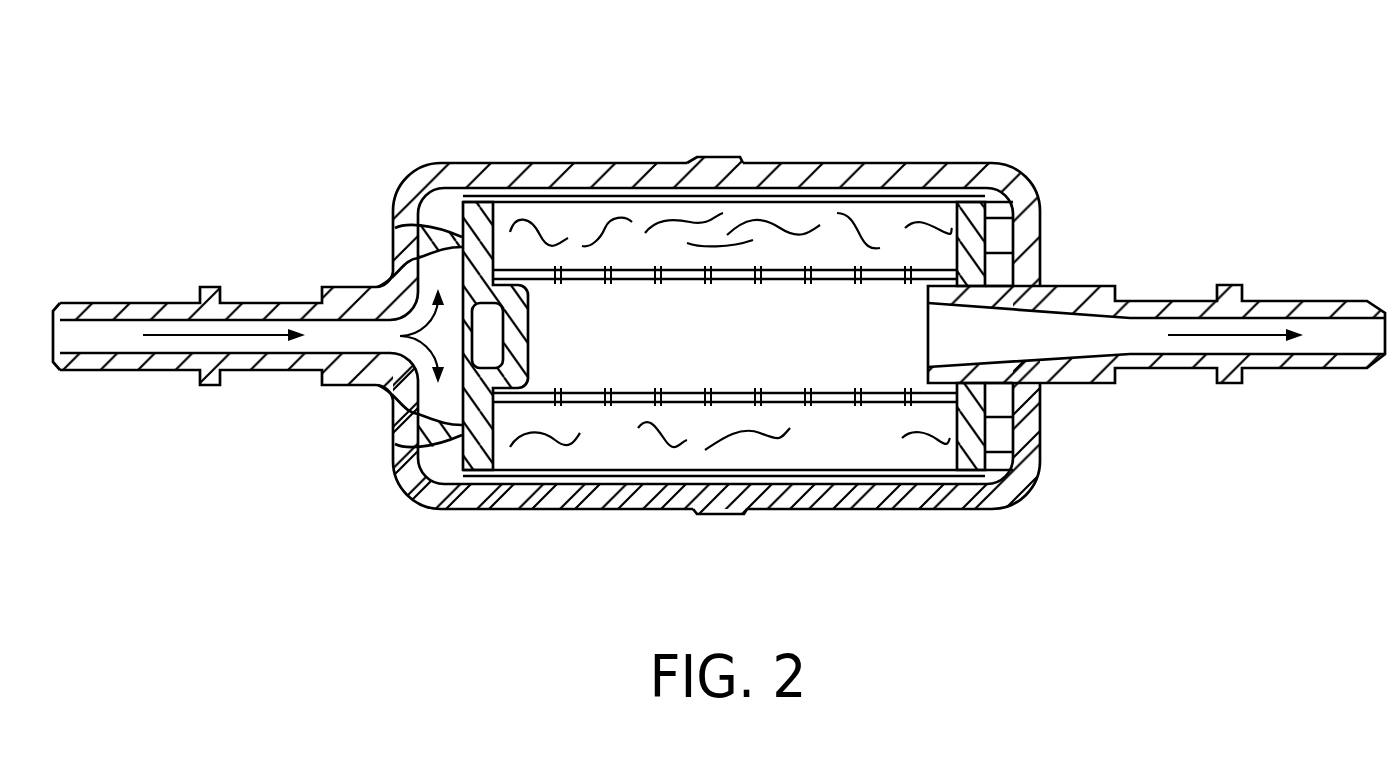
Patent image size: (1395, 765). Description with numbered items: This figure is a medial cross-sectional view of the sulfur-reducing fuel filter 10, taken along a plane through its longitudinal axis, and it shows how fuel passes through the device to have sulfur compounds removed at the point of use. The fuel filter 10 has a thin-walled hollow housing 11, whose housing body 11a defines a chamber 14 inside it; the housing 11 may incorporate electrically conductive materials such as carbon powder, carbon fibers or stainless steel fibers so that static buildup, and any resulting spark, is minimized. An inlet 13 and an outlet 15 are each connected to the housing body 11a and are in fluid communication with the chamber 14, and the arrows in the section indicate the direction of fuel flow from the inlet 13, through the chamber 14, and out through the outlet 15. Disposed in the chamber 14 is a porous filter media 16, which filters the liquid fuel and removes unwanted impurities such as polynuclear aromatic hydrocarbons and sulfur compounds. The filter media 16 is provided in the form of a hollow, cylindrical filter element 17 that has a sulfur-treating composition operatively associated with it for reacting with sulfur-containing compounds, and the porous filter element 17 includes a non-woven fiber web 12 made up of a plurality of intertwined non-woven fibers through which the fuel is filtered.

The sulfur-reducing fuel filter 10 is at (262, 504).
The housing 11 is at (800, 150).
The housing body 11a is at (658, 160).
The fiber web 12 is at (857, 457).
The inlet 13 is at (108, 303).
The chamber 14 is at (945, 468).
The outlet 15 is at (1328, 301).
The porous filter media 16 is at (548, 213).
The filter element 17 is at (617, 447).